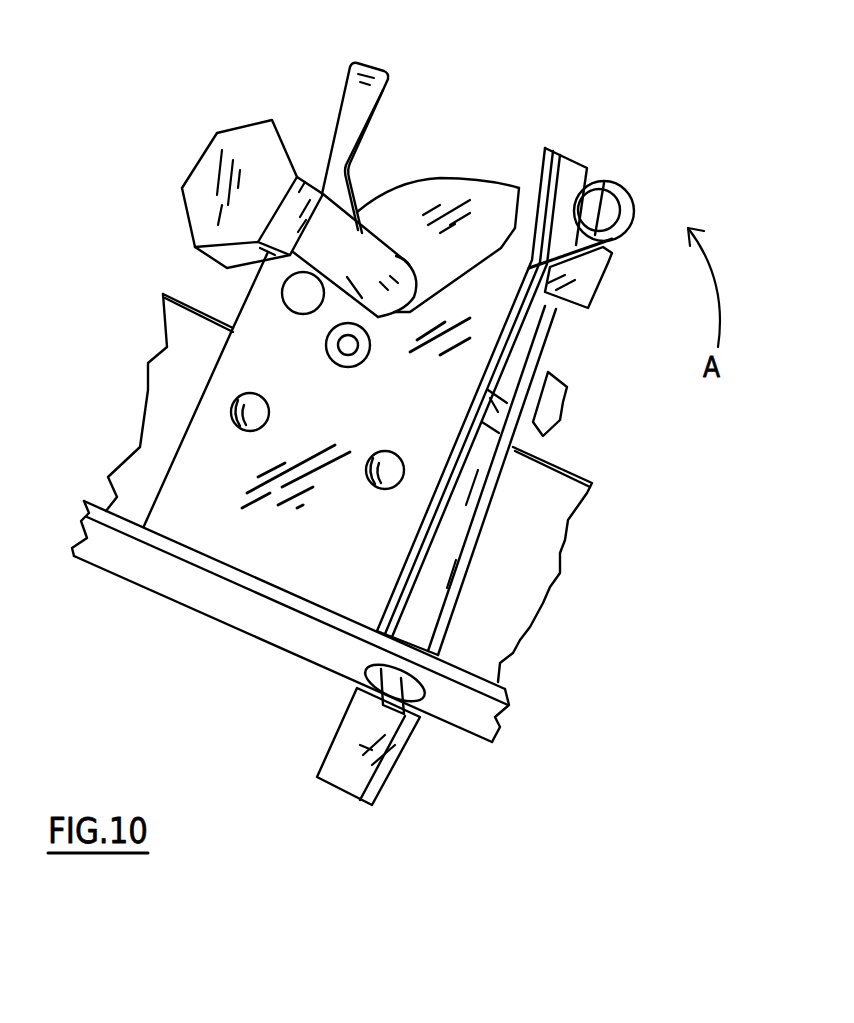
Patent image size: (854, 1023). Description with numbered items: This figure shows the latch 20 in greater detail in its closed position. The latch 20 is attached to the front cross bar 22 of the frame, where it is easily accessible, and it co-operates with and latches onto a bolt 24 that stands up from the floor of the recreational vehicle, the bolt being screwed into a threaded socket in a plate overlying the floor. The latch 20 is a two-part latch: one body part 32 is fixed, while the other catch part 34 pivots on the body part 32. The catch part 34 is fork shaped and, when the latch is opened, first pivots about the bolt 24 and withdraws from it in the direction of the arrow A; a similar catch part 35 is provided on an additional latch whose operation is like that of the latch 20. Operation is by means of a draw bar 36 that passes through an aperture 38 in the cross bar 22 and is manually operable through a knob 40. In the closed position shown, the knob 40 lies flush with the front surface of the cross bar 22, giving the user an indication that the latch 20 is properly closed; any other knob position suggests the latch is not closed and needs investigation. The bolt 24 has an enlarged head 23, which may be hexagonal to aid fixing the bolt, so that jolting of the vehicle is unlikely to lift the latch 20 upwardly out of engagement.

The latch 20 is at (260, 545).
The front cross bar 22 is at (178, 589).
The enlarged head 23 is at (227, 148).
The bolt 24 is at (553, 405).
The body part 32 is at (385, 88).
The catch part 34 is at (467, 187).
The catch part 35 is at (612, 178).
The draw bar 36 is at (555, 335).
The aperture 38 is at (423, 702).
The knob 40 is at (372, 803).